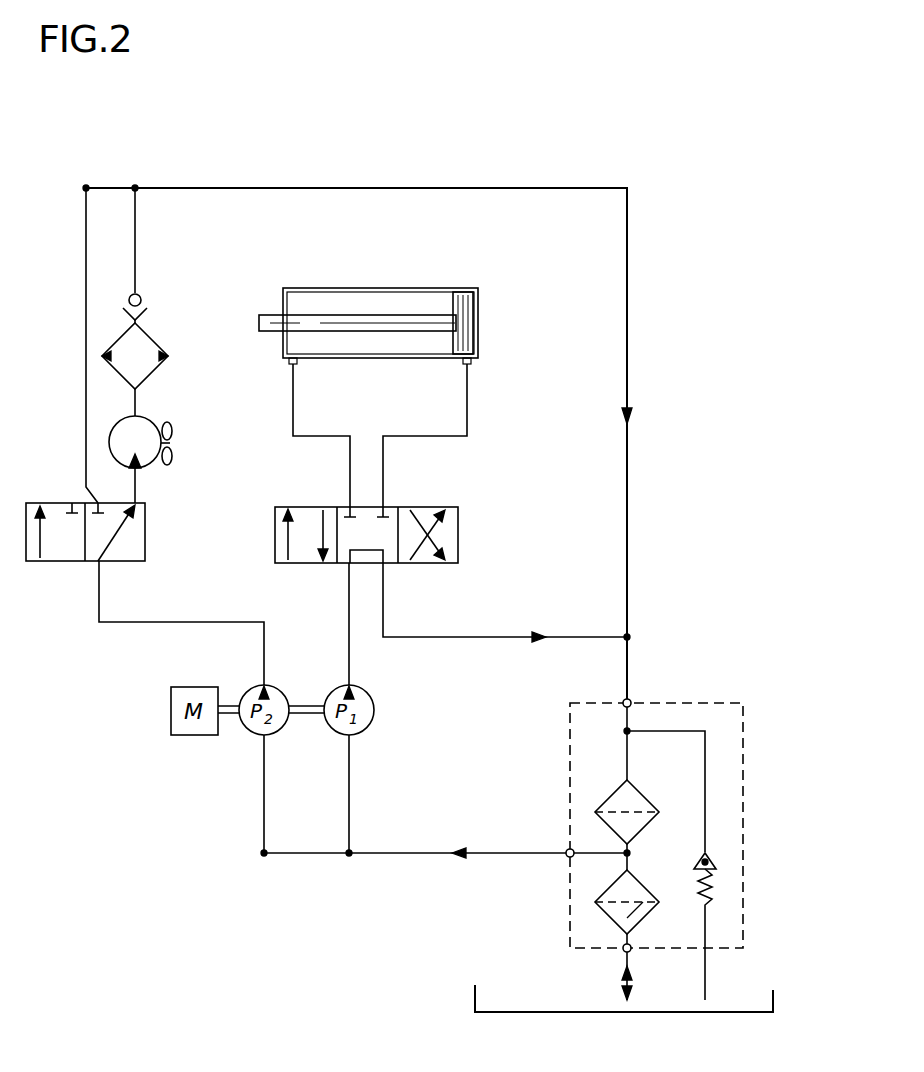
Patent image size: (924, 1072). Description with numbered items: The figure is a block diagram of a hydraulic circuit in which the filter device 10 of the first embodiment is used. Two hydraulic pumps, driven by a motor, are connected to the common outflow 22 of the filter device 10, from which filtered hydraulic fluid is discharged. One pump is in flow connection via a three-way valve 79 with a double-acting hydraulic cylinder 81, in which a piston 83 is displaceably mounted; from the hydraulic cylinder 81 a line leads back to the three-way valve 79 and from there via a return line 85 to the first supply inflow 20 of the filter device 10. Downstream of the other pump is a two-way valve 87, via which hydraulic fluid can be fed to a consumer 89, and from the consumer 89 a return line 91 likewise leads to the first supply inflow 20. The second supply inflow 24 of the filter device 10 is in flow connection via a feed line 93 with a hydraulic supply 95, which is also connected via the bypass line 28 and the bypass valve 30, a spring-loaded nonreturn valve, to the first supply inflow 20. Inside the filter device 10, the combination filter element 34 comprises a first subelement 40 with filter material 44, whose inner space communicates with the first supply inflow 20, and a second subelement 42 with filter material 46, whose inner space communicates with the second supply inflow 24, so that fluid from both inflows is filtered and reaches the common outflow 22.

The filter device 10 is at (560, 720).
The first supply inflow 20 is at (626, 702).
The outflow 22 is at (568, 850).
The second supply inflow 24 is at (623, 950).
The bypass line 28 is at (680, 728).
The bypass valve 30 is at (724, 866).
The combination filter element 34 is at (587, 879).
The first subelement 40 is at (652, 787).
The second subelement 42 is at (648, 927).
The filter material 44 is at (640, 806).
The filter material 46 is at (630, 906).
The three-way valve 79 is at (472, 498).
The double-acting hydraulic cylinder 81 is at (418, 288).
The piston 83 is at (474, 309).
The return line 85 is at (502, 637).
The two-way valve 87 is at (160, 517).
The consumer 89 is at (158, 407).
The return line 91 is at (478, 189).
The feed line 93 is at (422, 855).
The hydraulic supply 95 is at (503, 1010).